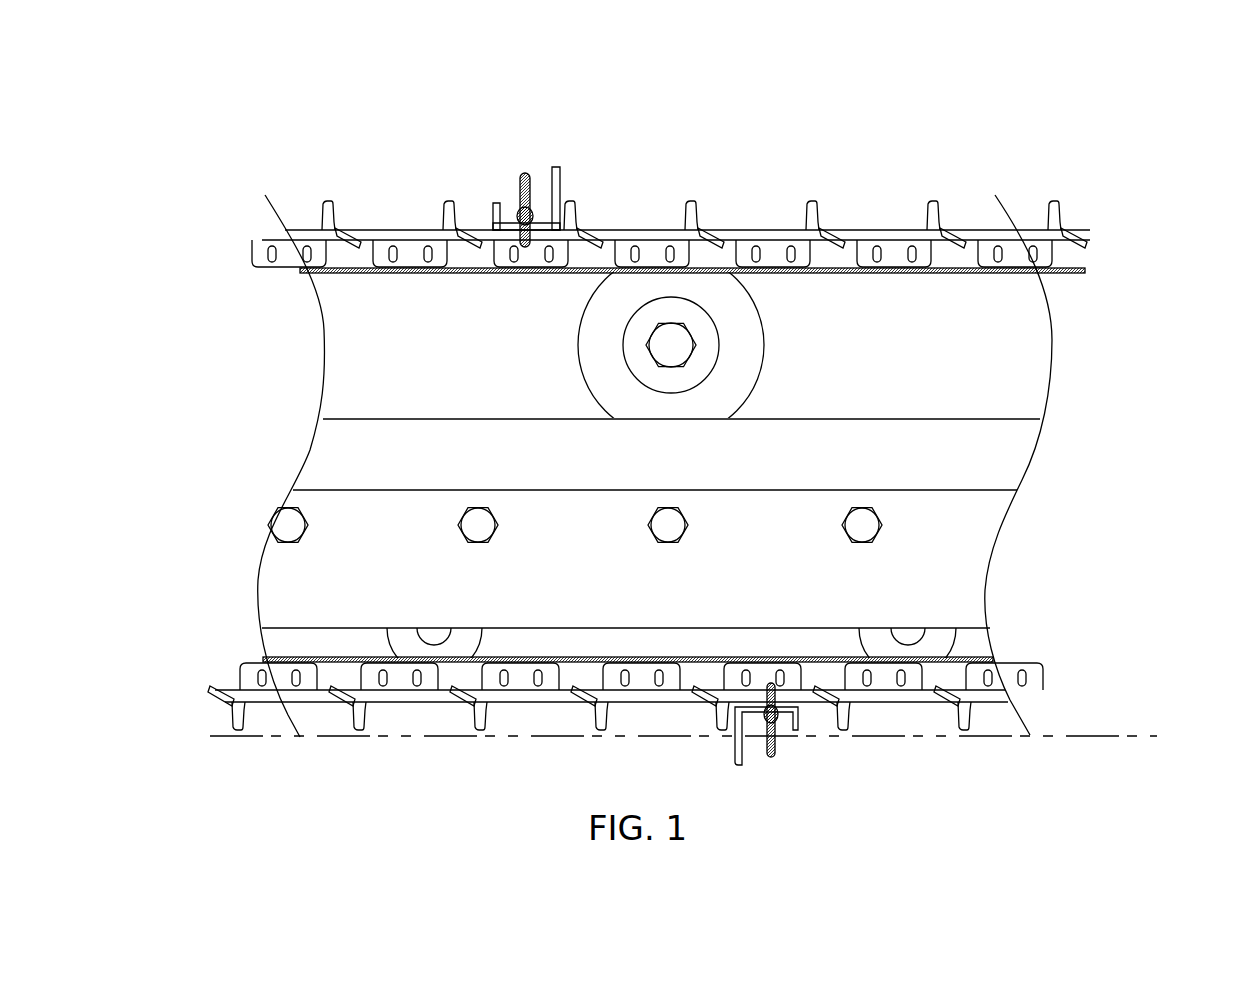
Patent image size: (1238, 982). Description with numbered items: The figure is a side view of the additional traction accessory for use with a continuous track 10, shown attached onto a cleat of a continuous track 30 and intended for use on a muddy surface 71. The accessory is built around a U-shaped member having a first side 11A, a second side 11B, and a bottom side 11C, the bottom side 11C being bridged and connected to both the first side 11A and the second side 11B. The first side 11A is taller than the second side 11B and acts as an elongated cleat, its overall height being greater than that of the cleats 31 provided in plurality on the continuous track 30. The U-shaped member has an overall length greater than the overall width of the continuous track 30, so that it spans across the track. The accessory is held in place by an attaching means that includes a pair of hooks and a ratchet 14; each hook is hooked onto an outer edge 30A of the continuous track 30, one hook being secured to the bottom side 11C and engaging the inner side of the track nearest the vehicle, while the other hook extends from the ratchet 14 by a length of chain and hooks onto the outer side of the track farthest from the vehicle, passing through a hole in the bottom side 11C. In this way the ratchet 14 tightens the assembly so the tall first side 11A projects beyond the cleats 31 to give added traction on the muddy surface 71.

The additional traction accessory for use with a continuous track 10 is at (276, 130).
The continuous track 30 is at (407, 230).
The outer edge of the continuous track 30A is at (773, 236).
The cleats 31 is at (695, 203).
The first side 11A is at (557, 168).
The second side 11B is at (500, 204).
The bottom side 11C is at (515, 221).
The ratchet 14 is at (525, 174).
The muddy surface 71 is at (1125, 734).